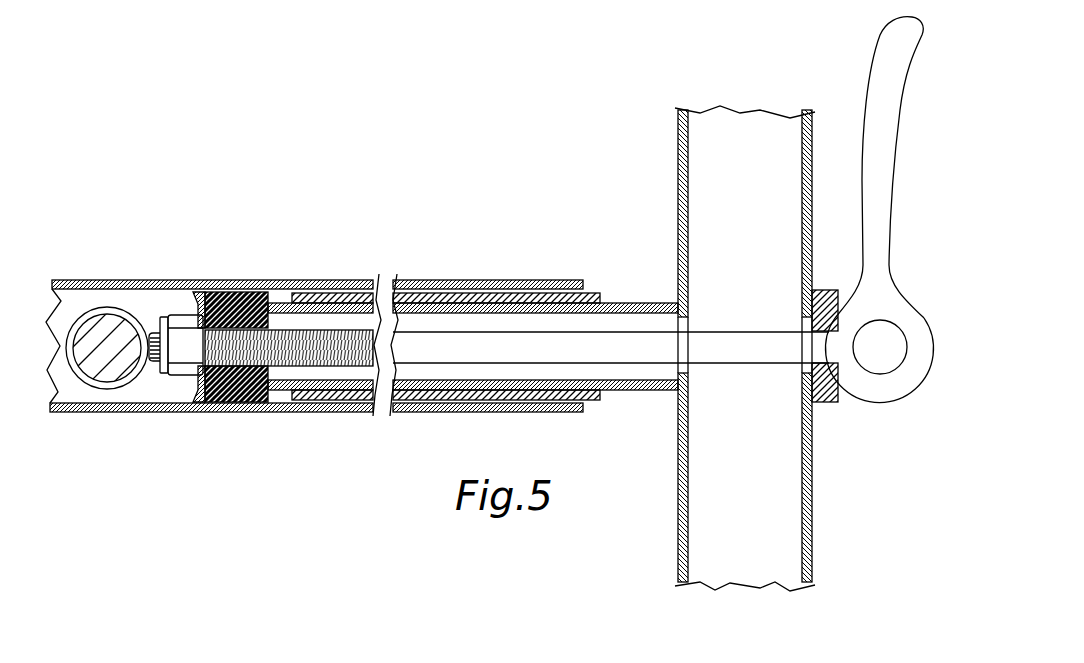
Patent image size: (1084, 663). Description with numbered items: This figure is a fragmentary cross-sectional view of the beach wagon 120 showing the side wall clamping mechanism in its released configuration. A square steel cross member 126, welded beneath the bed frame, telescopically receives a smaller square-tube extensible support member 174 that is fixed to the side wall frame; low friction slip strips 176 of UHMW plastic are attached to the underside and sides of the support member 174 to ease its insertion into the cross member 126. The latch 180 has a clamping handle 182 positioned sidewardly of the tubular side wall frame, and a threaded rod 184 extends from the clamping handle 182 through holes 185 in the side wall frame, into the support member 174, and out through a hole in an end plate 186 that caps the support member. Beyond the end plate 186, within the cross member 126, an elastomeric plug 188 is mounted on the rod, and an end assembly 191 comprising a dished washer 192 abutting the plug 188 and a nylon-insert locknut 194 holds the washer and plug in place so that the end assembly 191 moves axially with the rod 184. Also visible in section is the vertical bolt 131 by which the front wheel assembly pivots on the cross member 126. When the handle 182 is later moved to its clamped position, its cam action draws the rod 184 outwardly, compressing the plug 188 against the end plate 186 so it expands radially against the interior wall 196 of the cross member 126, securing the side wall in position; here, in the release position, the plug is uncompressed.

The beach wagon 120 is at (625, 196).
The cross member 126 is at (428, 280).
The vertical bolt 131 is at (107, 308).
The extensible support member 174 is at (642, 303).
The slip strip 176 is at (596, 294).
The latch 180 is at (905, 408).
The clamping handle 182 is at (910, 67).
The threaded rod 184 is at (733, 331).
The hole 185 is at (803, 369).
The end plate 186 is at (301, 391).
The elastomeric plug 188 is at (235, 292).
The end assembly 191 is at (182, 378).
The dished washer 192 is at (194, 300).
The nut 194 is at (168, 376).
The interior wall 196 is at (60, 397).